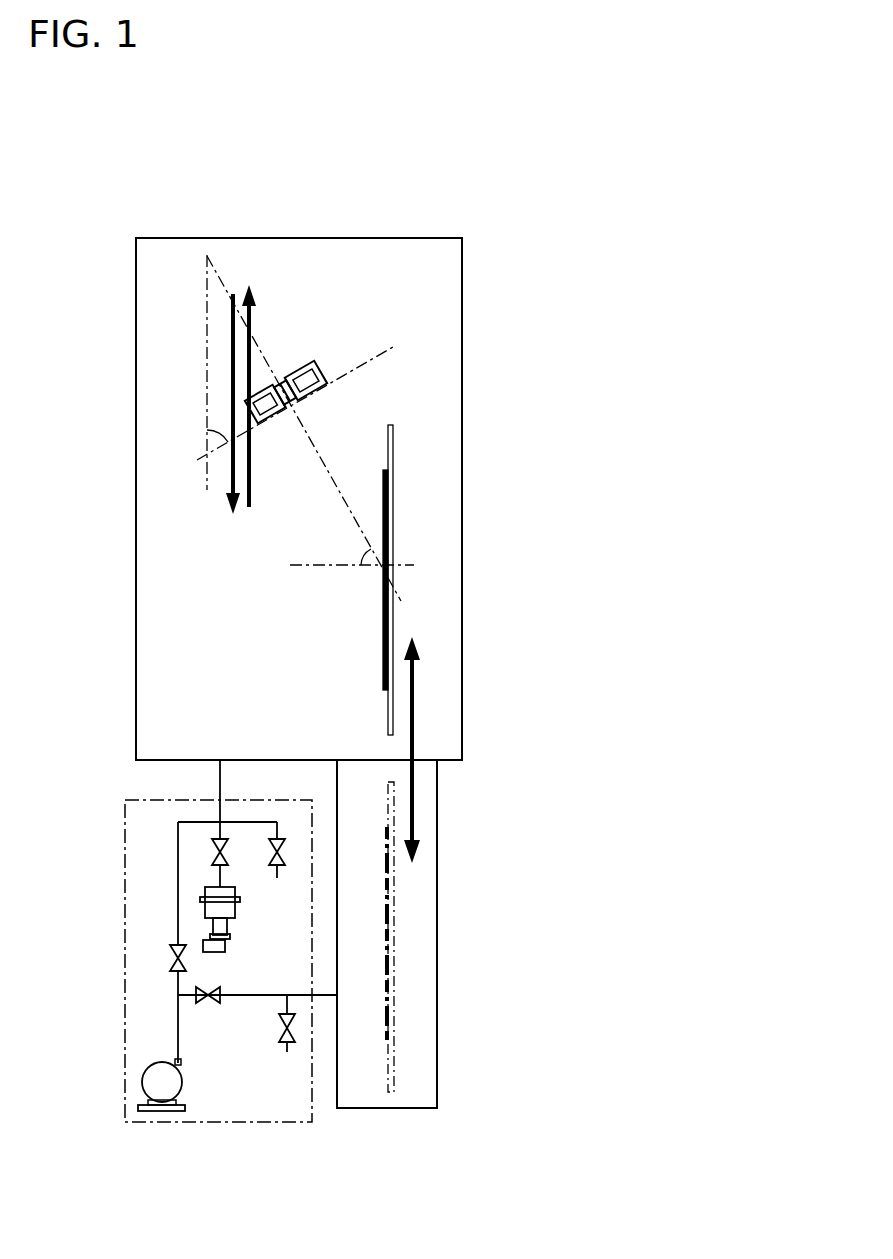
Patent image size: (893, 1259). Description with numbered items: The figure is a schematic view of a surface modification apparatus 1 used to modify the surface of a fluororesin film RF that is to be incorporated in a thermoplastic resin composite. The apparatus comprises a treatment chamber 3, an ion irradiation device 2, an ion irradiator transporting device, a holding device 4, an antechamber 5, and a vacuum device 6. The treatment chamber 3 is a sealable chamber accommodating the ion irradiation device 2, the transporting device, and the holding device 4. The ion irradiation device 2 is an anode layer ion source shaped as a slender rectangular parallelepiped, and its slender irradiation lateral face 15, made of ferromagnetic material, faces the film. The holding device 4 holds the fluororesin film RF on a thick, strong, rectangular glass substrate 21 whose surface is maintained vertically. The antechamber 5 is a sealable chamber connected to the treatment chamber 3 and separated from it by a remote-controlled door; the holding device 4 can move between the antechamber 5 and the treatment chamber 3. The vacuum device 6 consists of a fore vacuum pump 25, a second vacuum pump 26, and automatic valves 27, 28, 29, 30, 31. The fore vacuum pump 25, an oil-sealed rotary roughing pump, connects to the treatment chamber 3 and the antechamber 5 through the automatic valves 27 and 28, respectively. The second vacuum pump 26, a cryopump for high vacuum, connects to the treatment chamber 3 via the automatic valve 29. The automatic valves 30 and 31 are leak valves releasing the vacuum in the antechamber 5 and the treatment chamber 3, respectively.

The surface modification apparatus 1 is at (541, 210).
The ion irradiation device 2 is at (279, 372).
The treatment chamber 3 is at (270, 660).
The holding device 4 is at (400, 526).
The antechamber 5 is at (370, 988).
The vacuum device 6 is at (121, 1001).
The irradiation lateral face 15 is at (302, 411).
The glass substrate 21 is at (393, 445).
The fore vacuum pump 25 is at (152, 1080).
The second vacuum pump 26 is at (204, 910).
The automatic valve 27 is at (173, 964).
The automatic valve 28 is at (215, 1003).
The automatic valve 29 is at (213, 853).
The automatic valve 30 is at (277, 1030).
The automatic valve 31 is at (283, 857).
The fluororesin film RF is at (383, 603).